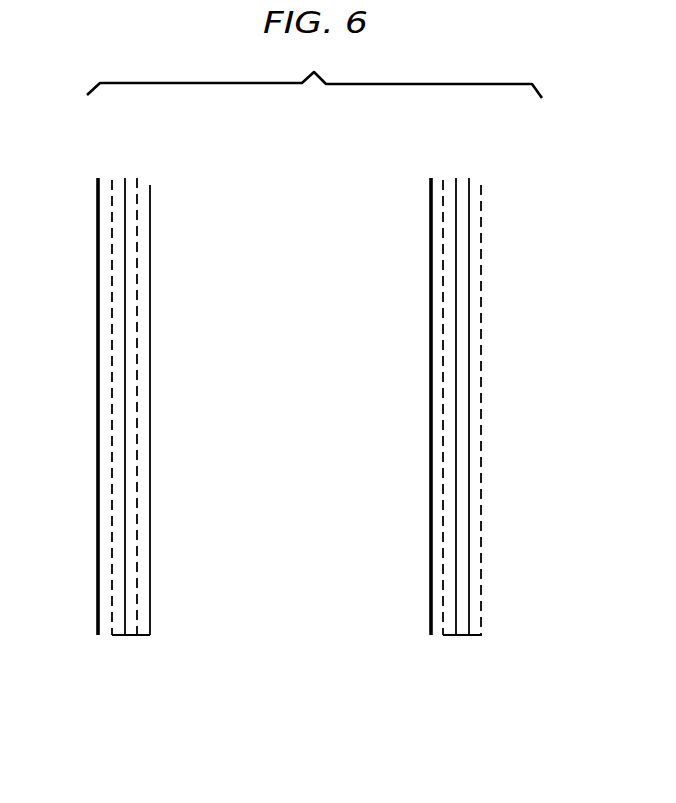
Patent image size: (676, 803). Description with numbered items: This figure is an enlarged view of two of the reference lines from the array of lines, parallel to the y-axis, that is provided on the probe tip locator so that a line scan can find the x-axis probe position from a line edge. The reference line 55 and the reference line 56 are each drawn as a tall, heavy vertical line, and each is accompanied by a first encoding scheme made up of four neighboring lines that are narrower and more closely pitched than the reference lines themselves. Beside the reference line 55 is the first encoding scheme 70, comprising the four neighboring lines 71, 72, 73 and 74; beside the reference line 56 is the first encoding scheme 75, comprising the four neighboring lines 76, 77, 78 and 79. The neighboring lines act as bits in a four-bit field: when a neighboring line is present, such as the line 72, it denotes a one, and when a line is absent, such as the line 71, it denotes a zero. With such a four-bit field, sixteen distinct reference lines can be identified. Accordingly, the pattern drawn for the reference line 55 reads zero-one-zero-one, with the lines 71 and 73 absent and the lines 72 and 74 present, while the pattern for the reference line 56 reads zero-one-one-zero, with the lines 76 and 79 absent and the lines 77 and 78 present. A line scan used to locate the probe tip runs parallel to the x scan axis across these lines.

The reference line 55 is at (98, 636).
The reference line 56 is at (431, 636).
The first encoding scheme 70 is at (150, 647).
The neighboring line 71 is at (112, 180).
The neighboring line 72 is at (125, 178).
The neighboring line 73 is at (137, 178).
The neighboring line 74 is at (150, 185).
The first encoding scheme 75 is at (482, 647).
The neighboring line 76 is at (443, 180).
The neighboring line 77 is at (456, 178).
The neighboring line 78 is at (469, 178).
The neighboring line 79 is at (481, 185).